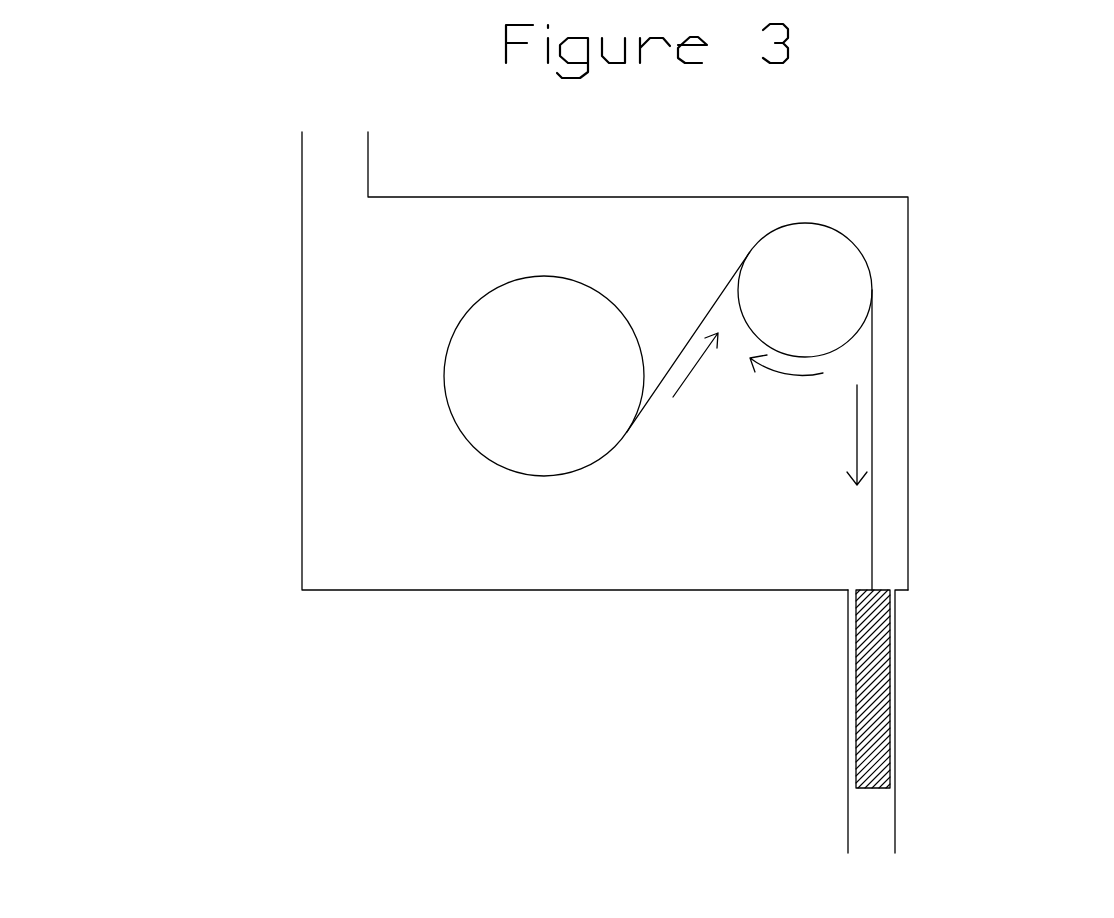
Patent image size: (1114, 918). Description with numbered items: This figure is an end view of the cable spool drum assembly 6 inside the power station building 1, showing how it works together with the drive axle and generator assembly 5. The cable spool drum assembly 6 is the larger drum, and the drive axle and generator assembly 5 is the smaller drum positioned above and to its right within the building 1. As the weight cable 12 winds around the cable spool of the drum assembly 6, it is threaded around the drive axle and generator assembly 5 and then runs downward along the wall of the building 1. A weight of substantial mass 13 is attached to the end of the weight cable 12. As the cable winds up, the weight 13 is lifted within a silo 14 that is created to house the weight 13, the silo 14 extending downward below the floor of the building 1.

The power station building 1 is at (288, 553).
The drive axle and generator assembly 5 is at (847, 272).
The cable spool drum assembly 6 is at (473, 392).
The weight cable 12 is at (885, 447).
The weight of substantial mass 13 is at (880, 682).
The silo 14 is at (905, 817).